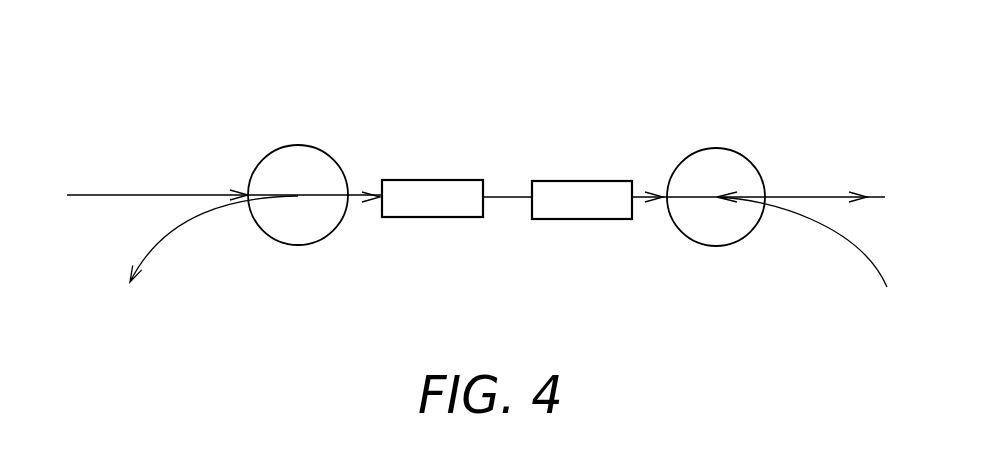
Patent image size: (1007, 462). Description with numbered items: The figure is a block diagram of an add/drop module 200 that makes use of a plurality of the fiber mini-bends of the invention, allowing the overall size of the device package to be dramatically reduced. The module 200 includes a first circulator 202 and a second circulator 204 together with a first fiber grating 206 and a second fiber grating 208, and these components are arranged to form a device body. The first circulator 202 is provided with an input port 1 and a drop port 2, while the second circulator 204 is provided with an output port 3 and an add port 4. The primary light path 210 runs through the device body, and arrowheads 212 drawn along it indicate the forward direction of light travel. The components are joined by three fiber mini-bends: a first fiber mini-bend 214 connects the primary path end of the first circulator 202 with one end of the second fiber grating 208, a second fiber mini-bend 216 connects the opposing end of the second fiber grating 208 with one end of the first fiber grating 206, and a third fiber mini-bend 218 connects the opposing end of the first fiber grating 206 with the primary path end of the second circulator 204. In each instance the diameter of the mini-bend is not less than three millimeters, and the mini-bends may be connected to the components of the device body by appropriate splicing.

The add/drop module 200 is at (574, 113).
The first circulator 202 is at (297, 146).
The second circulator 204 is at (747, 157).
The first fiber grating 206 is at (583, 219).
The second fiber grating 208 is at (408, 218).
The primary light path 210 is at (497, 190).
The arrowheads 212 is at (366, 203).
The first fiber mini-bend 214 is at (360, 193).
The second fiber mini-bend 216 is at (507, 200).
The third fiber mini-bend 218 is at (640, 193).
The input port 1 is at (140, 178).
The drop port 2 is at (198, 247).
The output port 3 is at (904, 196).
The add port 4 is at (812, 242).